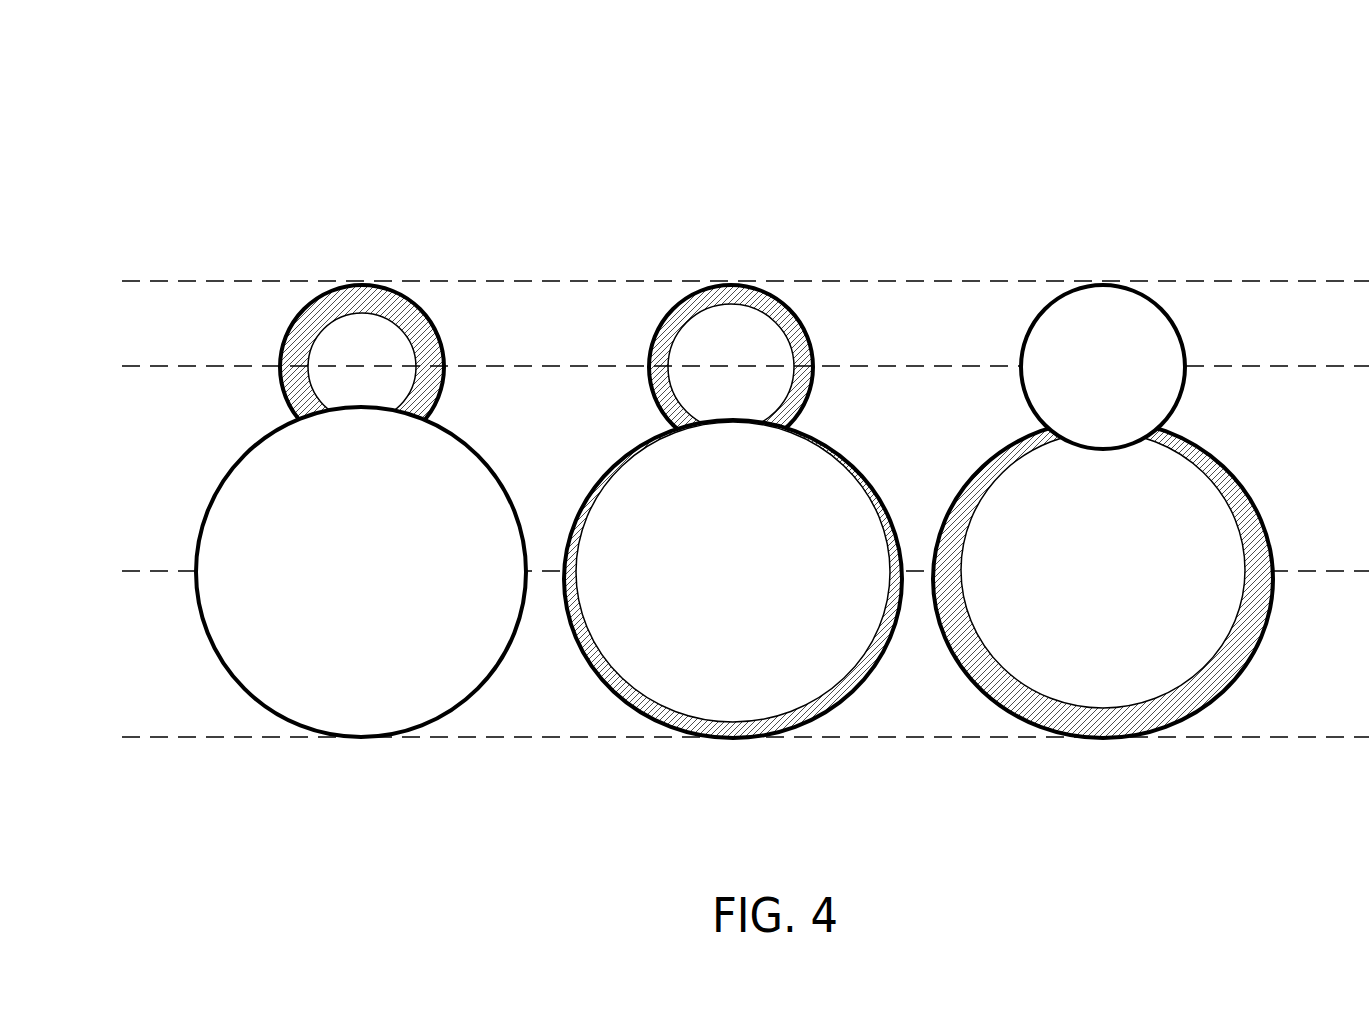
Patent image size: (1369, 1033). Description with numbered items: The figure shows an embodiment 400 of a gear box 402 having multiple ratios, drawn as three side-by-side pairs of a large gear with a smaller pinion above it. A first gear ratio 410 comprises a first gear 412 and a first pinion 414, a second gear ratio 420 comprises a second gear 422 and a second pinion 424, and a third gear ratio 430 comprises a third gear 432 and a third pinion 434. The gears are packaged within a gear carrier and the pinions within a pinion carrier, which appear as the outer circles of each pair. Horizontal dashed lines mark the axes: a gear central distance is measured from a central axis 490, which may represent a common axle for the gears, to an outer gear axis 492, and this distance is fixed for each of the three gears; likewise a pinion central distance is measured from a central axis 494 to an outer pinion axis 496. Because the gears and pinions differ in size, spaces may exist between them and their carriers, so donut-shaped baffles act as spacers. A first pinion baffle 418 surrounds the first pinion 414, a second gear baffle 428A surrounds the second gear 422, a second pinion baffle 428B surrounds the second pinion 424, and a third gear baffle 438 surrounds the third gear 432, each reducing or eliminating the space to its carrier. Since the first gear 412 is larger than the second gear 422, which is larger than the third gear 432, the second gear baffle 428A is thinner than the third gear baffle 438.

The embodiment 400 is at (1299, 67).
The gear box 402 is at (1218, 162).
The first gear ratio 410 is at (452, 231).
The first gear 412 is at (377, 627).
The first pinion 414 is at (375, 353).
The first pinion baffle 418 is at (355, 367).
The second gear ratio 420 is at (797, 224).
The second gear 422 is at (762, 627).
The second pinion 424 is at (745, 343).
The second gear baffle 428A is at (597, 667).
The second pinion baffle 428B is at (719, 367).
The third gear ratio 430 is at (1122, 223).
The third gear 432 is at (1132, 627).
The third pinion 434 is at (1122, 337).
The third gear baffle 438 is at (1247, 506).
The central axis 490 is at (160, 571).
The outer gear axis 492 is at (160, 737).
The central axis 494 is at (158, 366).
The outer pinion axis 496 is at (160, 281).